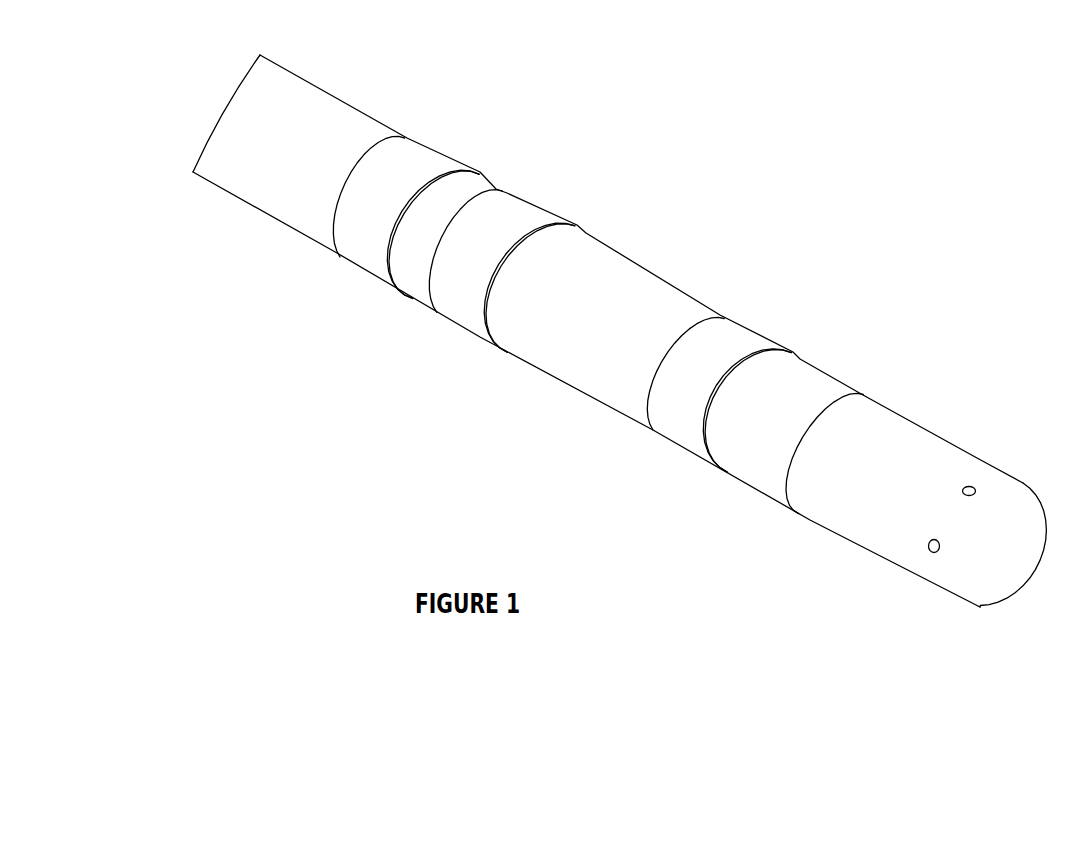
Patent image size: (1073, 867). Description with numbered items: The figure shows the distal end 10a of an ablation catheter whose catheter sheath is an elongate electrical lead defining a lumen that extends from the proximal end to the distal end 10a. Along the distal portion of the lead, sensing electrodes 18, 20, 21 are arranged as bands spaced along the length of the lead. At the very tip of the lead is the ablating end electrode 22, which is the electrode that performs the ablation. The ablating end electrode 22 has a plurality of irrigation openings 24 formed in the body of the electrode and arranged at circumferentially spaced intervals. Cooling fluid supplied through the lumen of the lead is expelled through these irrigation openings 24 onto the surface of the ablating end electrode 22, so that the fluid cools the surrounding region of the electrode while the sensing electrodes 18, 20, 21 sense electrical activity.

The distal end 10a is at (767, 200).
The sensing electrode 18 is at (435, 148).
The sensing electrode 20 is at (537, 205).
The sensing electrode 21 is at (750, 323).
The ablating end electrode 22 is at (943, 437).
The irrigation openings 24 is at (971, 499).